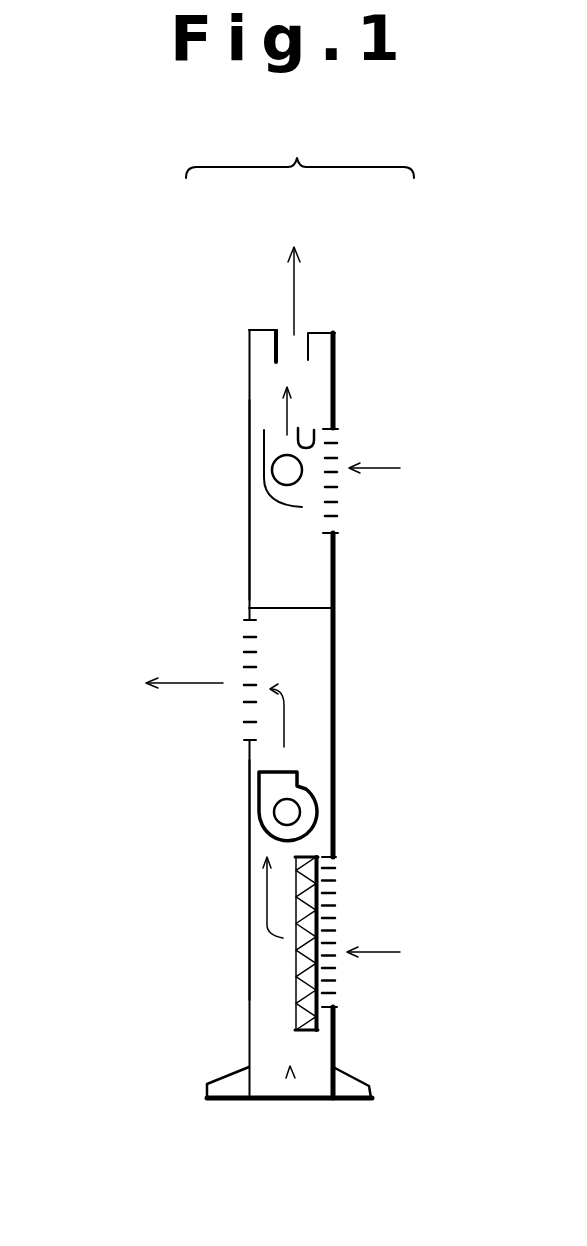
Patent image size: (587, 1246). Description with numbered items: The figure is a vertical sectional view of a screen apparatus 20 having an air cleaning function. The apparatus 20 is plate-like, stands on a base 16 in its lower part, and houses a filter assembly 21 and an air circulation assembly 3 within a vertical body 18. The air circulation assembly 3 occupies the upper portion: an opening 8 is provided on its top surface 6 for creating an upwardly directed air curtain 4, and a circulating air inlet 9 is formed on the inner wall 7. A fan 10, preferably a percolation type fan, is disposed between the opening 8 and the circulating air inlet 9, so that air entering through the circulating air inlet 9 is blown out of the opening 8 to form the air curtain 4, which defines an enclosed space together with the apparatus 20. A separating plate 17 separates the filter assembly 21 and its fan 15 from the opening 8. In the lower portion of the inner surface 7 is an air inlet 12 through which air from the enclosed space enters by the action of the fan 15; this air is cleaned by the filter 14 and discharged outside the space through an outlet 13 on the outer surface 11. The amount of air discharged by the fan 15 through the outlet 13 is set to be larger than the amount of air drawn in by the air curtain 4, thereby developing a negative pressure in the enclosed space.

The air circulation assembly 3 is at (340, 406).
The air curtain 4 is at (293, 292).
The top surface 6 is at (262, 328).
The inner wall 7 is at (335, 618).
The opening 8 is at (307, 345).
The circulating air inlet 9 is at (330, 508).
The fan 10 is at (284, 472).
The outer surface 11 is at (249, 543).
The air inlet 12 is at (333, 873).
The outlet 13 is at (245, 712).
The filter 14 is at (310, 1032).
The fan 15 is at (305, 788).
The base 16 is at (230, 1082).
The separating plate 17 is at (305, 609).
The vertical body 18 is at (300, 144).
The apparatus 20 is at (140, 402).
The filter assembly 21 is at (290, 1067).